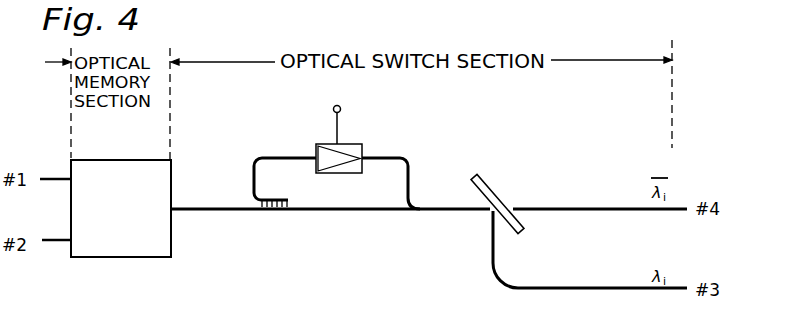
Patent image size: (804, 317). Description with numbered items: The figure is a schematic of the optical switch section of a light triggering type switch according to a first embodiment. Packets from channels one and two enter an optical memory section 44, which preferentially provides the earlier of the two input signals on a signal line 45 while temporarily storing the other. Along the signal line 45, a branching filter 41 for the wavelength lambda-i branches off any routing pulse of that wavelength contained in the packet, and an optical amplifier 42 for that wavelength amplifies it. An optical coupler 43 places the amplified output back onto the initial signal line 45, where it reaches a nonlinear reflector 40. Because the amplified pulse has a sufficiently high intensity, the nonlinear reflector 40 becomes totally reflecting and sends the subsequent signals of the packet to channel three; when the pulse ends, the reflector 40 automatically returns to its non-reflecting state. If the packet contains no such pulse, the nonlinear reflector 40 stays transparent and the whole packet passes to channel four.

The nonlinear reflector 40 is at (488, 178).
The branching filter 41 is at (271, 214).
The optical amplifier 42 is at (357, 143).
The optical coupler 43 is at (419, 214).
The optical memory section 44 is at (118, 159).
The signal line 45 is at (206, 213).